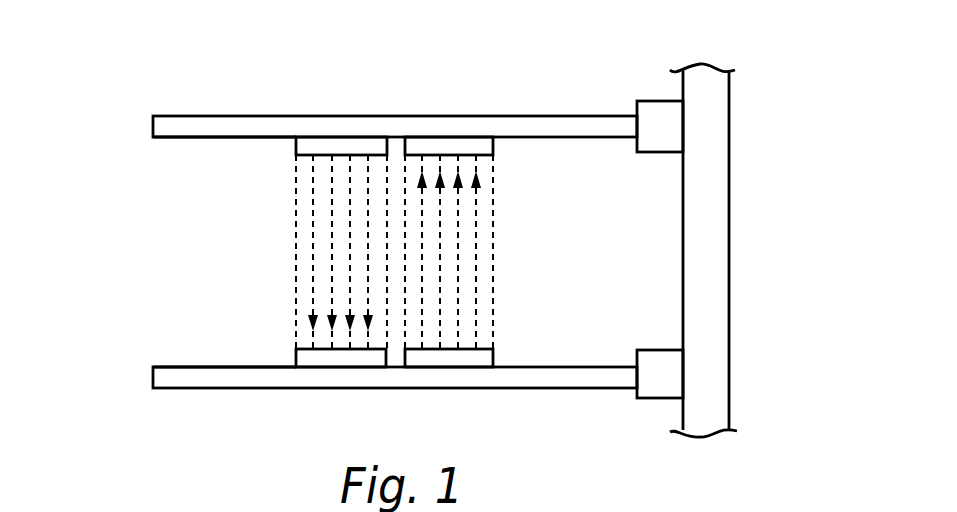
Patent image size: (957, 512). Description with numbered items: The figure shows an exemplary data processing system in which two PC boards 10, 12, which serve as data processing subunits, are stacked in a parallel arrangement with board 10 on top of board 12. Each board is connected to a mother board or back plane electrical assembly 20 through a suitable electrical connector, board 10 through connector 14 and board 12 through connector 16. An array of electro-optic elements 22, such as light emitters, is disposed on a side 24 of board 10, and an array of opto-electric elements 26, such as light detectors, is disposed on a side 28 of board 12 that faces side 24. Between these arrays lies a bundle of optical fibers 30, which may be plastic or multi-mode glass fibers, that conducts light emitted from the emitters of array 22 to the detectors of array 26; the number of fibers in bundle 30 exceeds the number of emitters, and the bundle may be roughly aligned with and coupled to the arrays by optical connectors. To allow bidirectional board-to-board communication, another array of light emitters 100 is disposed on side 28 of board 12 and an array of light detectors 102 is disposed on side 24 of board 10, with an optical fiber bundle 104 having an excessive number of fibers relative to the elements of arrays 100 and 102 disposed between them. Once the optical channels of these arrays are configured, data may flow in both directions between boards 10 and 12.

The PC board 10 is at (152, 128).
The PC board 12 is at (152, 378).
The electrical connector 14 is at (660, 100).
The electrical connector 16 is at (660, 399).
The back plane electrical assembly 20 is at (720, 218).
The array of electro-optic elements 22 is at (295, 147).
The side of board 24 is at (198, 139).
The array of opto-electric elements 26 is at (295, 358).
The side of board 28 is at (208, 366).
The bundle of optical fibers 30 is at (292, 252).
The array of electro-optic elements 100 is at (495, 357).
The array of opto-electric elements 102 is at (495, 143).
The optical fiber bundle 104 is at (502, 259).